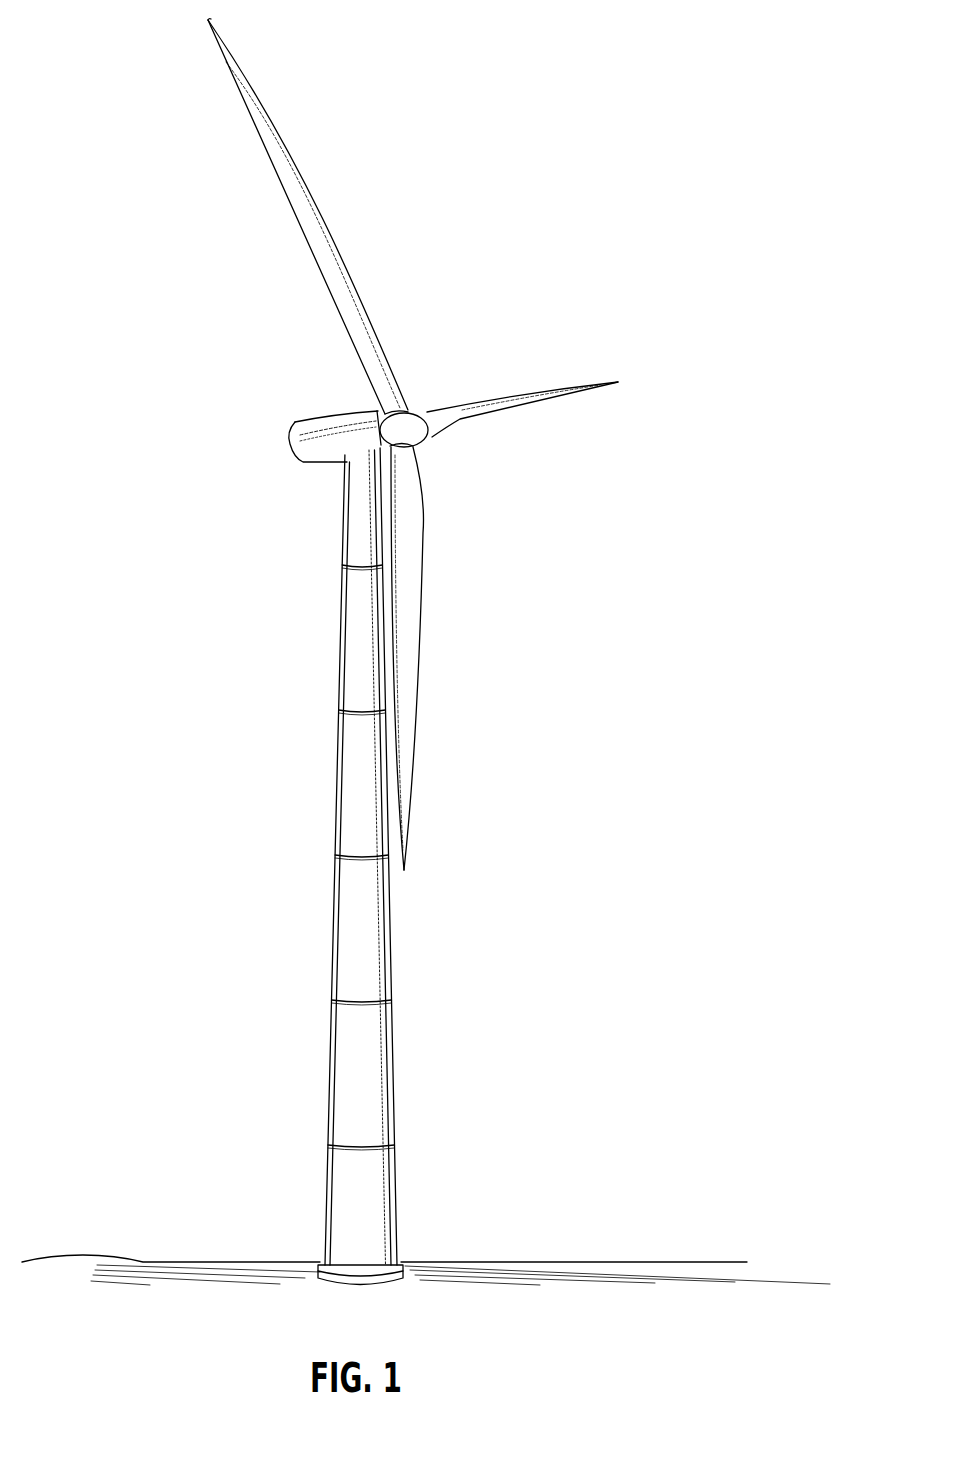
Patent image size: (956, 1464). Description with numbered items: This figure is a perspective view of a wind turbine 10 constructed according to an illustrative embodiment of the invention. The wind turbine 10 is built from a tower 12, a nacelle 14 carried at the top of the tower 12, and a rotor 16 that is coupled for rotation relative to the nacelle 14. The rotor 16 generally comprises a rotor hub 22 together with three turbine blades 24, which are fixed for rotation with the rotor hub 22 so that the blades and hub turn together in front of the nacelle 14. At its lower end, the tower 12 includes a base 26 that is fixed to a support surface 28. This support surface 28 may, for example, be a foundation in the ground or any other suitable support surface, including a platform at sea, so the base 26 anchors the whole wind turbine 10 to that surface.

The wind turbine 10 is at (413, 642).
The tower 12 is at (334, 886).
The nacelle 14 is at (294, 432).
The rotor 16 is at (413, 444).
The rotor hub 22 is at (417, 417).
The turbine blades 24 is at (323, 220).
The base 26 is at (342, 1285).
The support surface 28 is at (443, 1262).